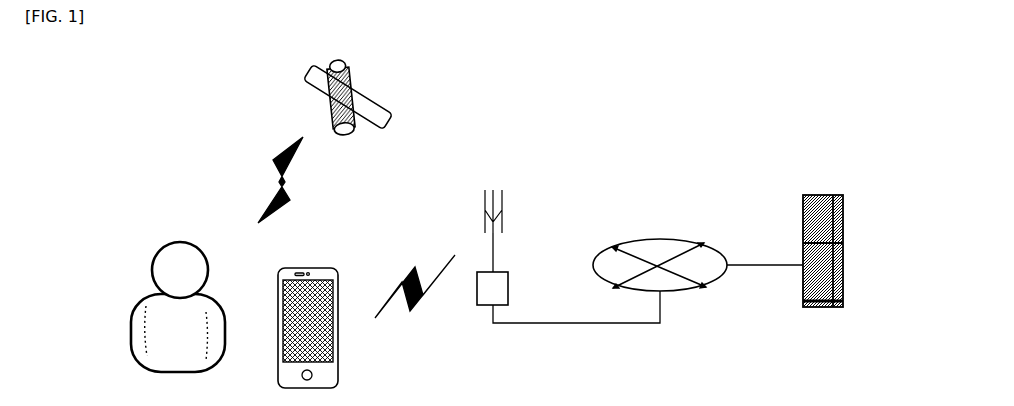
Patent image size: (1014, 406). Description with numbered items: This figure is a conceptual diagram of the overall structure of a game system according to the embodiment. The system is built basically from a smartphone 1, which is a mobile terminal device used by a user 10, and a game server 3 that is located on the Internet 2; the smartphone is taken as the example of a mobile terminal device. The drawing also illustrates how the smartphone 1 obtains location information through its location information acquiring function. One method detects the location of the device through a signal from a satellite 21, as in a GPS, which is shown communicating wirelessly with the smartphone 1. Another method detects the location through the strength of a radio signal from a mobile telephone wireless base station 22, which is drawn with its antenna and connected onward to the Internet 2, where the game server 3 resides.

The user 10 is at (150, 370).
The smartphone 1 is at (277, 376).
The satellite 21 is at (382, 134).
The mobile telephone wireless base station 22 is at (509, 300).
The Internet 2 is at (697, 291).
The game server 3 is at (817, 308).